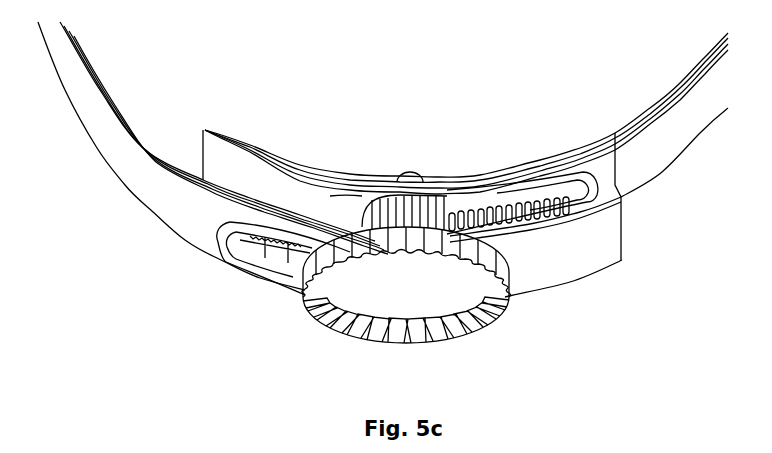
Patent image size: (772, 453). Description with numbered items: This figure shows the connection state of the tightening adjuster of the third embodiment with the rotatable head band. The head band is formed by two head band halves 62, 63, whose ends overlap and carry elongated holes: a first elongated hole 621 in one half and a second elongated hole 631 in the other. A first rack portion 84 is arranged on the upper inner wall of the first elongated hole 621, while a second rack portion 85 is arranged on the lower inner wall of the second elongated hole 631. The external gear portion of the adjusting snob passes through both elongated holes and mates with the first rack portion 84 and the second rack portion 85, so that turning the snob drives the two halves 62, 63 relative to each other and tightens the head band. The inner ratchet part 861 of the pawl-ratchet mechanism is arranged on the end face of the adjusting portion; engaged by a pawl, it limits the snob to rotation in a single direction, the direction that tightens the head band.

The head band half 62 is at (172, 195).
The first elongated hole 621 is at (252, 245).
The head band half 63 is at (640, 147).
The second elongated hole 631 is at (493, 205).
The first rack portion 84 is at (300, 243).
The second rack portion 85 is at (538, 202).
The inner ratchet part 861 is at (432, 325).